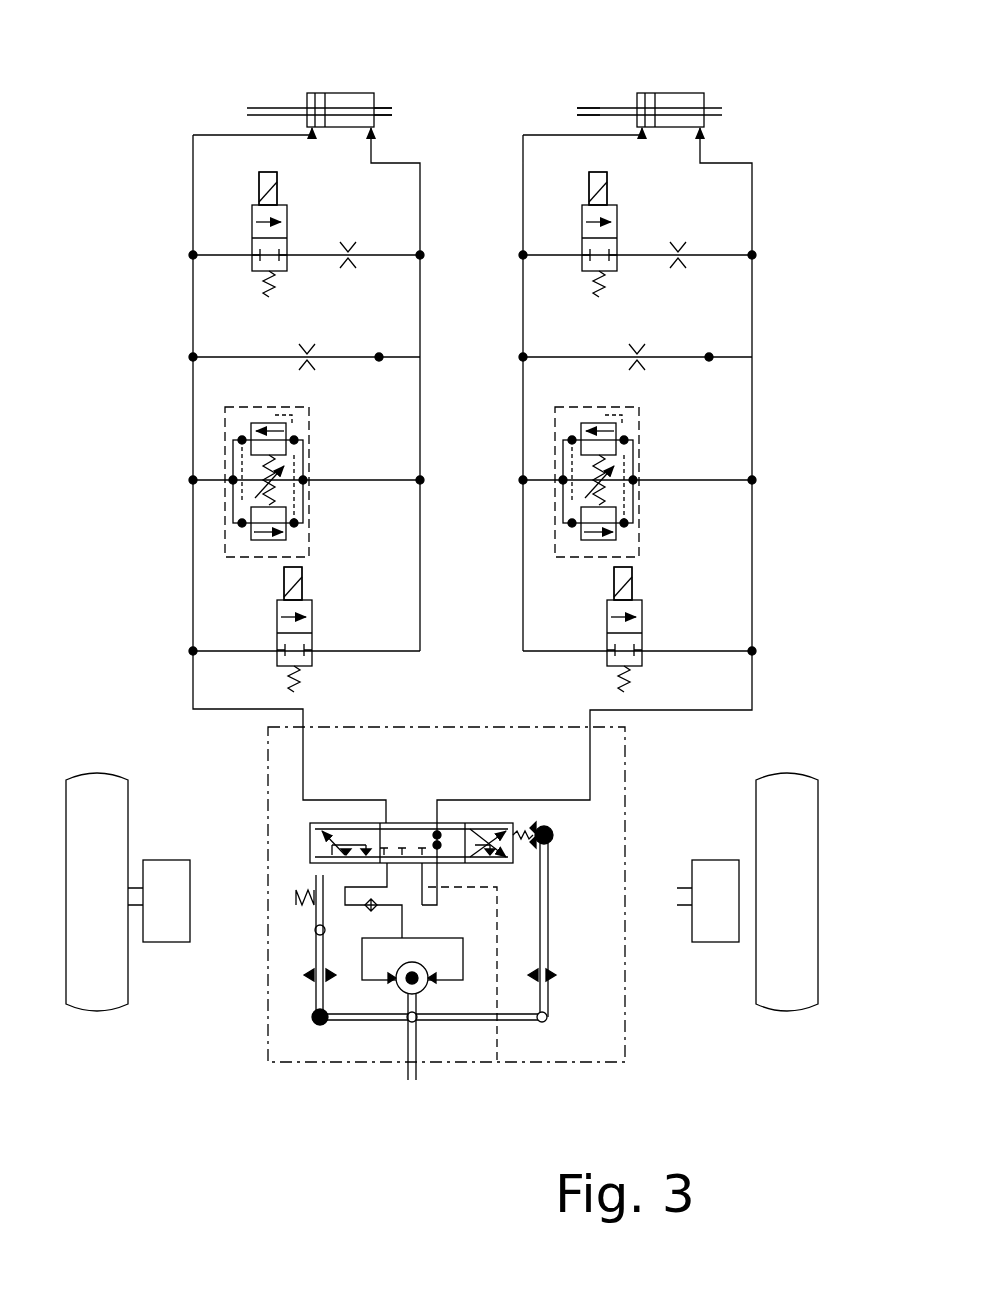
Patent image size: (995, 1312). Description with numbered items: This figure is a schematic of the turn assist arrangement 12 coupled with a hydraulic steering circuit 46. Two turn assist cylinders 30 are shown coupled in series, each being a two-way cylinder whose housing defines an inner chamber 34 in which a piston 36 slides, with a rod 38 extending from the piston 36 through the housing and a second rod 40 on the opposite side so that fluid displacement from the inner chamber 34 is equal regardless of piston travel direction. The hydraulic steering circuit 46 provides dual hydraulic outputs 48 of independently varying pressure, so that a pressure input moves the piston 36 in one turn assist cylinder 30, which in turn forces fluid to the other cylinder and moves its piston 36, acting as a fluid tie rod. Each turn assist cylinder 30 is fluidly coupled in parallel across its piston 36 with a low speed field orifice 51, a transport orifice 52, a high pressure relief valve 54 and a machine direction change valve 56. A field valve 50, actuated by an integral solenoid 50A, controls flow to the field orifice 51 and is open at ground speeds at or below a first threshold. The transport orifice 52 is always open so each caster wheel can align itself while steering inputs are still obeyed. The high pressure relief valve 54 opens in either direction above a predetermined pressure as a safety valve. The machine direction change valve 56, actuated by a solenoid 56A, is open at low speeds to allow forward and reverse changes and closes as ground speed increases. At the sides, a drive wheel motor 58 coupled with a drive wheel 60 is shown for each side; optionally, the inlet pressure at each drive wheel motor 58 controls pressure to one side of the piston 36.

The turn assist arrangement 12 is at (422, 84).
The turn assist cylinder 30 is at (352, 94).
The inner chamber 34 is at (333, 97).
The piston 36 is at (318, 94).
The rod 38 is at (262, 108).
The second rod 40 is at (385, 121).
The hydraulic steering circuit 46 is at (268, 774).
The dual hydraulic outputs 48 is at (304, 716).
The field valve 50 is at (296, 214).
The solenoid 50A is at (277, 188).
The low speed field orifice 51 is at (354, 240).
The transport orifice 52 is at (314, 342).
The high pressure relief valve 54 is at (312, 426).
The machine direction change valve 56 is at (320, 630).
The solenoid 56A is at (305, 582).
The drive wheel motor 58 is at (166, 943).
The drive wheel 60 is at (130, 972).